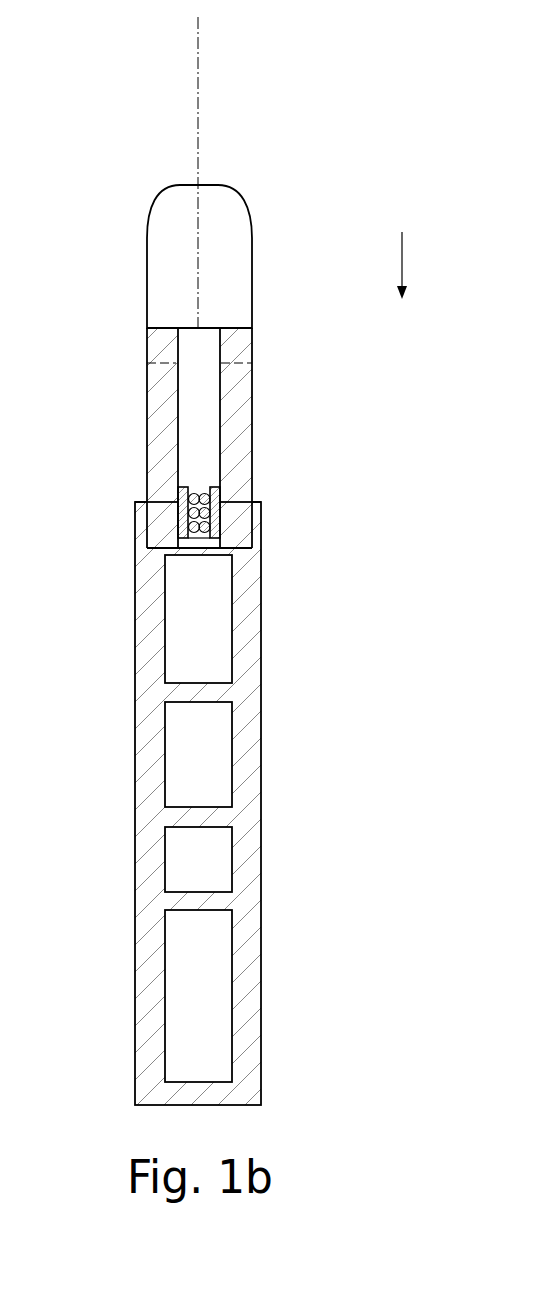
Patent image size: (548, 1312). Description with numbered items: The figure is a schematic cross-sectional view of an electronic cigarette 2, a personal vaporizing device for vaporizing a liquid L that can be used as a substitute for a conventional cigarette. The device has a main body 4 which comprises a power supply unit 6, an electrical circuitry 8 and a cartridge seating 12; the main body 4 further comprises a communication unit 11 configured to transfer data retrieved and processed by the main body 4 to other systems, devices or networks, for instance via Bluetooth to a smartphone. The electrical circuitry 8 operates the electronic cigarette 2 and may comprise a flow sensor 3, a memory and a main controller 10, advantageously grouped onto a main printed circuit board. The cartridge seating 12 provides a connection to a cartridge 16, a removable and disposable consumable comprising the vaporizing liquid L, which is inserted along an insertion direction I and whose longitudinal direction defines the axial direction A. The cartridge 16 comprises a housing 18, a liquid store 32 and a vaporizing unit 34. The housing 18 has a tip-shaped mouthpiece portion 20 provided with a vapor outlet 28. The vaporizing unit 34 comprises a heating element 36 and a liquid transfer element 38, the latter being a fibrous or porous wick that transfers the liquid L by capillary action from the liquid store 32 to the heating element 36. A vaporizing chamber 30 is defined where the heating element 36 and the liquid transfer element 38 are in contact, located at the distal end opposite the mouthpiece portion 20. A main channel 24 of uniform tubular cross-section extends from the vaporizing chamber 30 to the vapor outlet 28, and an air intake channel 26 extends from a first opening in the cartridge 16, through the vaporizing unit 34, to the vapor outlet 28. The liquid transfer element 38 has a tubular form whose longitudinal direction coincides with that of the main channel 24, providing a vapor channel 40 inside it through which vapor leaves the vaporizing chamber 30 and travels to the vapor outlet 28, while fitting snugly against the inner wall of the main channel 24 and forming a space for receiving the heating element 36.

The electronic cigarette 2 is at (136, 184).
The flow sensor 3 is at (207, 653).
The main body 4 is at (269, 850).
The power supply unit 6 is at (190, 995).
The electrical circuitry 8 is at (165, 602).
The main controller 10 is at (193, 752).
The communication unit 11 is at (190, 860).
The cartridge seating 12 is at (180, 546).
The cartridge 16 is at (141, 344).
The housing 18 is at (252, 367).
The mouthpiece portion 20 is at (148, 247).
The main channel 24 is at (203, 402).
The air intake channel 26 is at (198, 542).
The vapor outlet 28 is at (192, 185).
The vaporizing chamber 30 is at (196, 475).
The liquid store 32 is at (232, 455).
The vaporizing unit 34 is at (346, 507).
The heating element 36 is at (222, 522).
The liquid transfer element 38 is at (215, 512).
The vapor channel 40 is at (180, 503).
The axial direction A is at (215, 190).
The insertion direction I is at (409, 265).
The liquid L is at (161, 390).